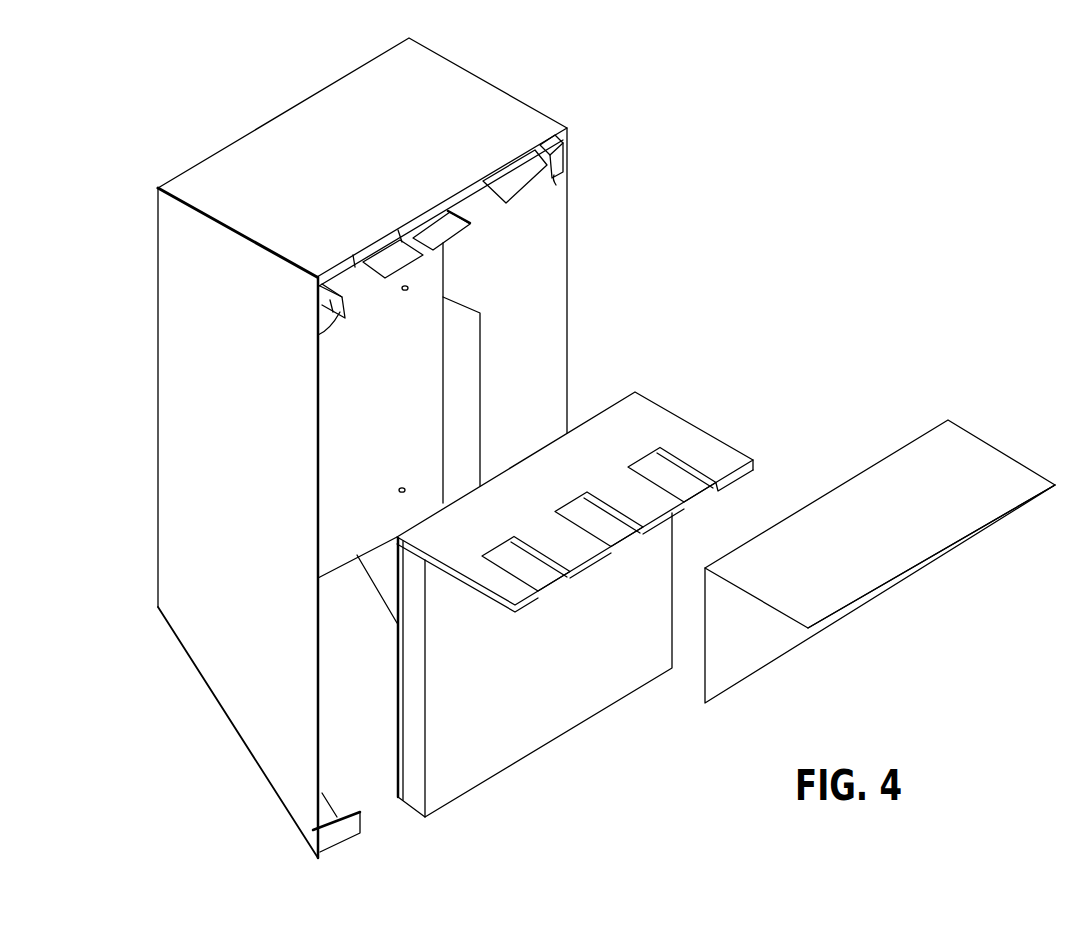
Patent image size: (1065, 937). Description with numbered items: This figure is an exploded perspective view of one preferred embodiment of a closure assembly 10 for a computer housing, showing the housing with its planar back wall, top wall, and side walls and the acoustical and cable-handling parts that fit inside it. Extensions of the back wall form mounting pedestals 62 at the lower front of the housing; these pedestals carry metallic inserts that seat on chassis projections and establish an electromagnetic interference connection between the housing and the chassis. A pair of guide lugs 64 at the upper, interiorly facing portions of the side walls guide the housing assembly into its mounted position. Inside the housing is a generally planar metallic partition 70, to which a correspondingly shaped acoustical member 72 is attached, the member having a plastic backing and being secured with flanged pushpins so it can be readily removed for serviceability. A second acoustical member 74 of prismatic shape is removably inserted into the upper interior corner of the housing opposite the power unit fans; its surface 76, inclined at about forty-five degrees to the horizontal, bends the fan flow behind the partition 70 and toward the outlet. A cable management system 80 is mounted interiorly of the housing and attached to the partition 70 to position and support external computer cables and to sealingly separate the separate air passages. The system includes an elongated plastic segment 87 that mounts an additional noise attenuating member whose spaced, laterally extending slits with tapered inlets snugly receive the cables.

The cabinet housing 10 is at (389, 448).
The mounting pedestals 62 is at (343, 833).
The guide lugs 64 is at (337, 317).
The partition 70 is at (404, 383).
The acoustical member 72 is at (556, 659).
The acoustical member 74 is at (880, 549).
The surface 76 is at (822, 633).
The cable management system 80 is at (584, 565).
The elongated segment 87 is at (513, 516).